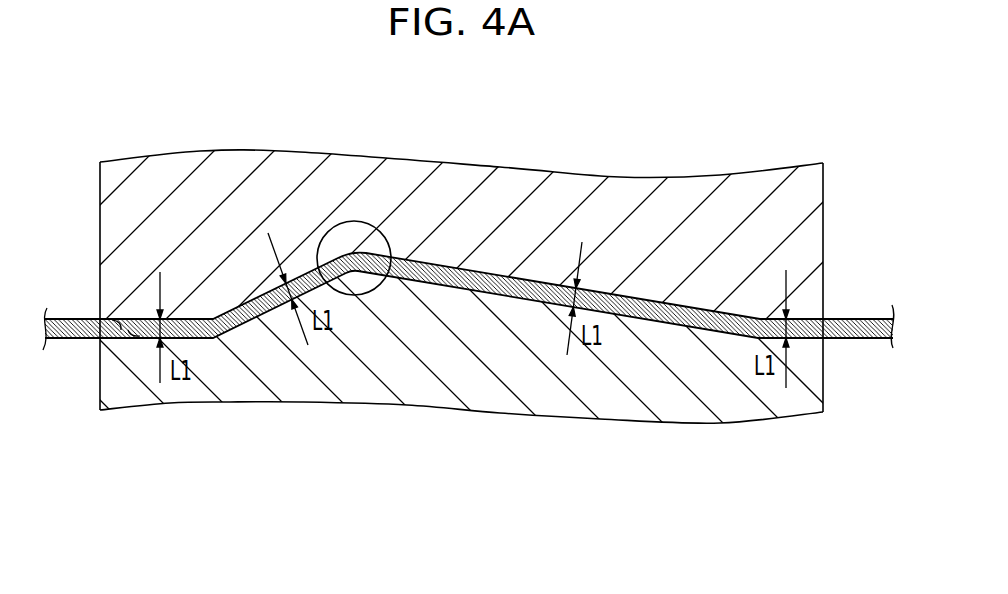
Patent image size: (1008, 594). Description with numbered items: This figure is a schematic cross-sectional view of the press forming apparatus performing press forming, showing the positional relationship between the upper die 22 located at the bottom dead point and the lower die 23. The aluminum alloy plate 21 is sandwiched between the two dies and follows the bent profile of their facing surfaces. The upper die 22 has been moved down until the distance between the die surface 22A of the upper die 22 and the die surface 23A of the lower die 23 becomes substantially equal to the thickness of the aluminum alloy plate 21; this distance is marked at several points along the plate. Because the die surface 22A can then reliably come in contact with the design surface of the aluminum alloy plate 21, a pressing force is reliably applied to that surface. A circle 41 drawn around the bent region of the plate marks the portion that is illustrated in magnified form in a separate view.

The aluminum alloy plate 21 is at (70, 317).
The upper die 22 is at (572, 188).
The die surface of the upper die 22A is at (112, 320).
The lower die 23 is at (500, 402).
The die surface of the lower die 23A is at (140, 337).
The circle 41 is at (362, 222).